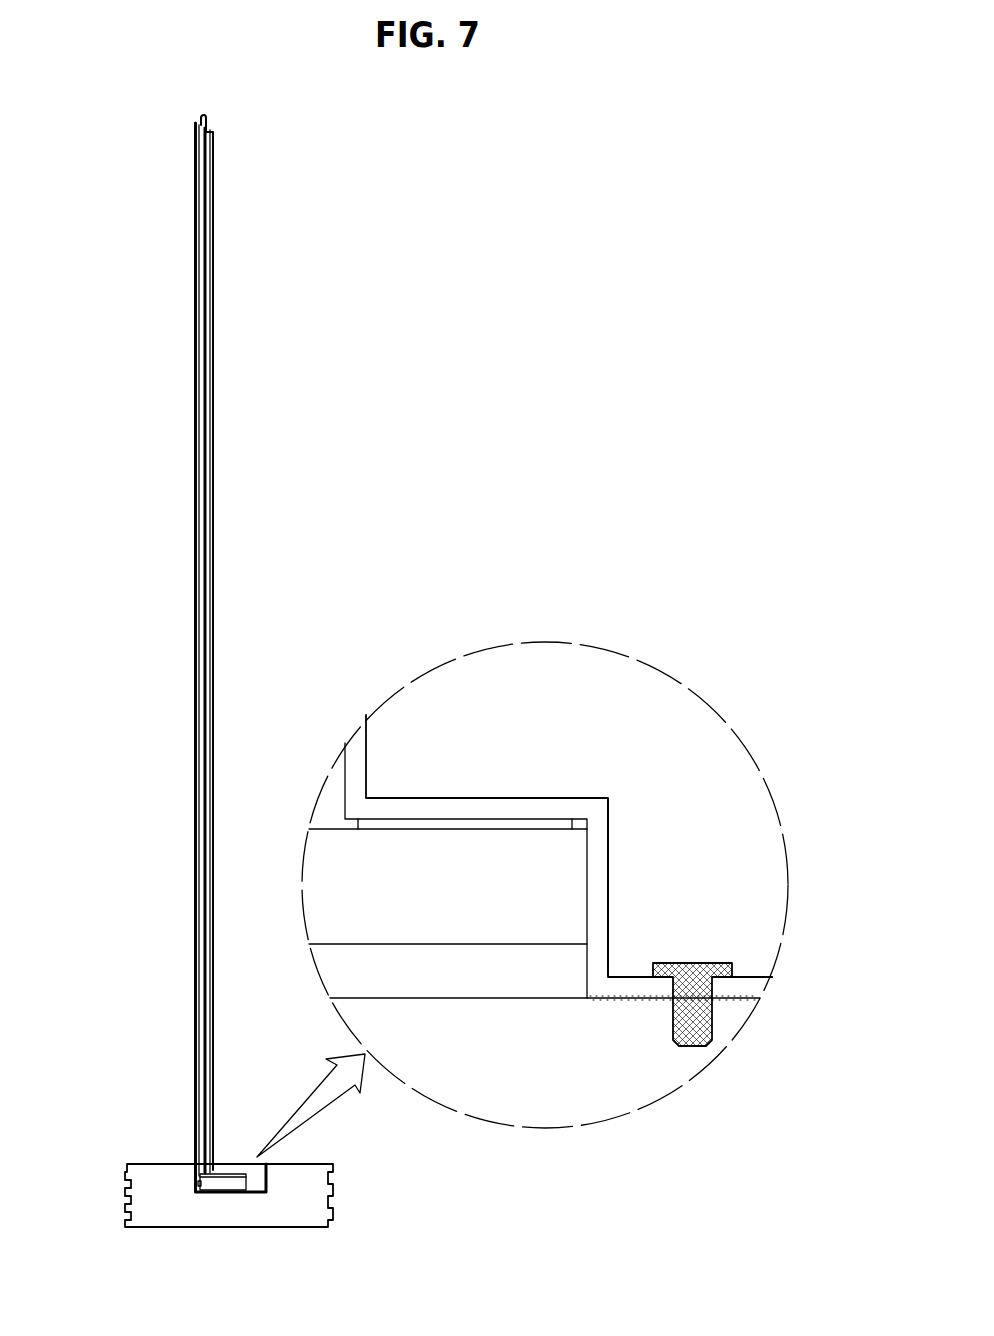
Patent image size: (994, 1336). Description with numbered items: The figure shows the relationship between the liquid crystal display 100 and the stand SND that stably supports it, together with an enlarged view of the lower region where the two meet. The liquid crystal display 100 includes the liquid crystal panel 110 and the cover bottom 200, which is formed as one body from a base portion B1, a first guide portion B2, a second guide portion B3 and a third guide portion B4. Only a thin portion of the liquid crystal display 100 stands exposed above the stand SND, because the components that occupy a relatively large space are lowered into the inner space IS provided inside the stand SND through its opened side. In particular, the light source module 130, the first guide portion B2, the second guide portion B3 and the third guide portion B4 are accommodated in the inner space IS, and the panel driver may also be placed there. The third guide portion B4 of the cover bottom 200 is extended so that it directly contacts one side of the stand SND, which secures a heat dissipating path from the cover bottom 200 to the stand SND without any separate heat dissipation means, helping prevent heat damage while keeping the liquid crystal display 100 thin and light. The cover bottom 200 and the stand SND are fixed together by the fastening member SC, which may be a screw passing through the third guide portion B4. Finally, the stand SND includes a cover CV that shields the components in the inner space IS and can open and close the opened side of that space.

The liquid crystal display 100 is at (149, 241).
The liquid crystal panel 110 is at (193, 653).
The cover bottom 200 is at (215, 653).
The light source module 130 is at (221, 1183).
The stand SND is at (318, 1216).
The inner space IS is at (264, 1182).
The cover CV is at (240, 1158).
The base portion B1 is at (348, 741).
The first guide portion B2 is at (473, 810).
The second guide portion B3 is at (618, 882).
The third guide portion B4 is at (640, 985).
The fastening member SC is at (695, 1047).